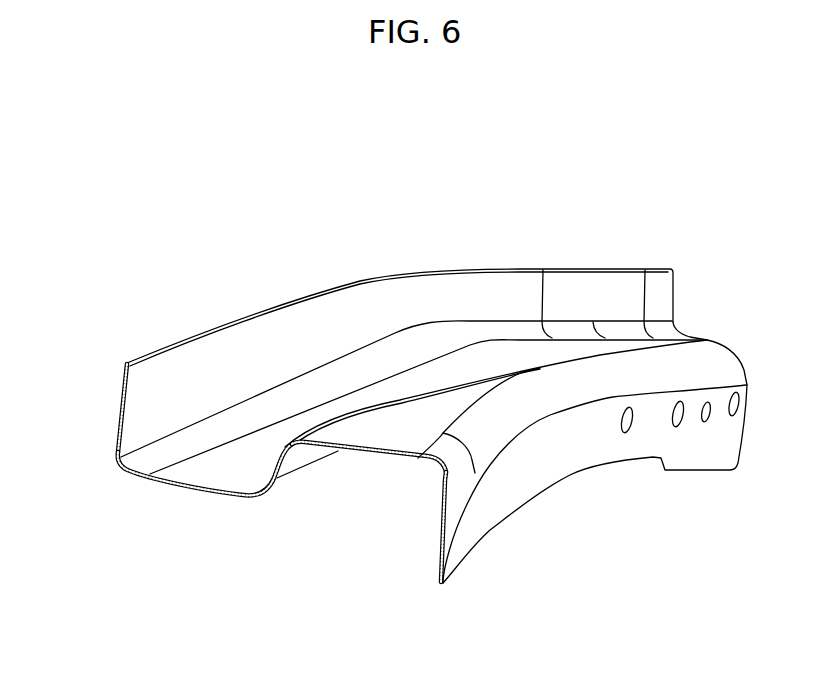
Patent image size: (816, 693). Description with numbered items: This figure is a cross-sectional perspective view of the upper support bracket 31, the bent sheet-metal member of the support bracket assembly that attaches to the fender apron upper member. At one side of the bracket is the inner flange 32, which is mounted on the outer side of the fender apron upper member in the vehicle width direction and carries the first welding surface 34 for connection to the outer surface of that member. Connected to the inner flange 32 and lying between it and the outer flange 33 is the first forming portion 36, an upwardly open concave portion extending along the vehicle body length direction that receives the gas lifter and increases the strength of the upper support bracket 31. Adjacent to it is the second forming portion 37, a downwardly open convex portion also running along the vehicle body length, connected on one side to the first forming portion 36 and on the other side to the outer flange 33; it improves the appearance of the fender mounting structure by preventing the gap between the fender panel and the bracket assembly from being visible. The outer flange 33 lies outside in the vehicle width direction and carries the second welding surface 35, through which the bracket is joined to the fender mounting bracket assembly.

The upper support bracket 31 is at (431, 169).
The inner flange 32 is at (110, 401).
The outer flange 33 is at (428, 554).
The first welding surface 34 is at (376, 435).
The second welding surface 35 is at (508, 490).
The first forming portion 36 is at (172, 506).
The second forming portion 37 is at (358, 470).